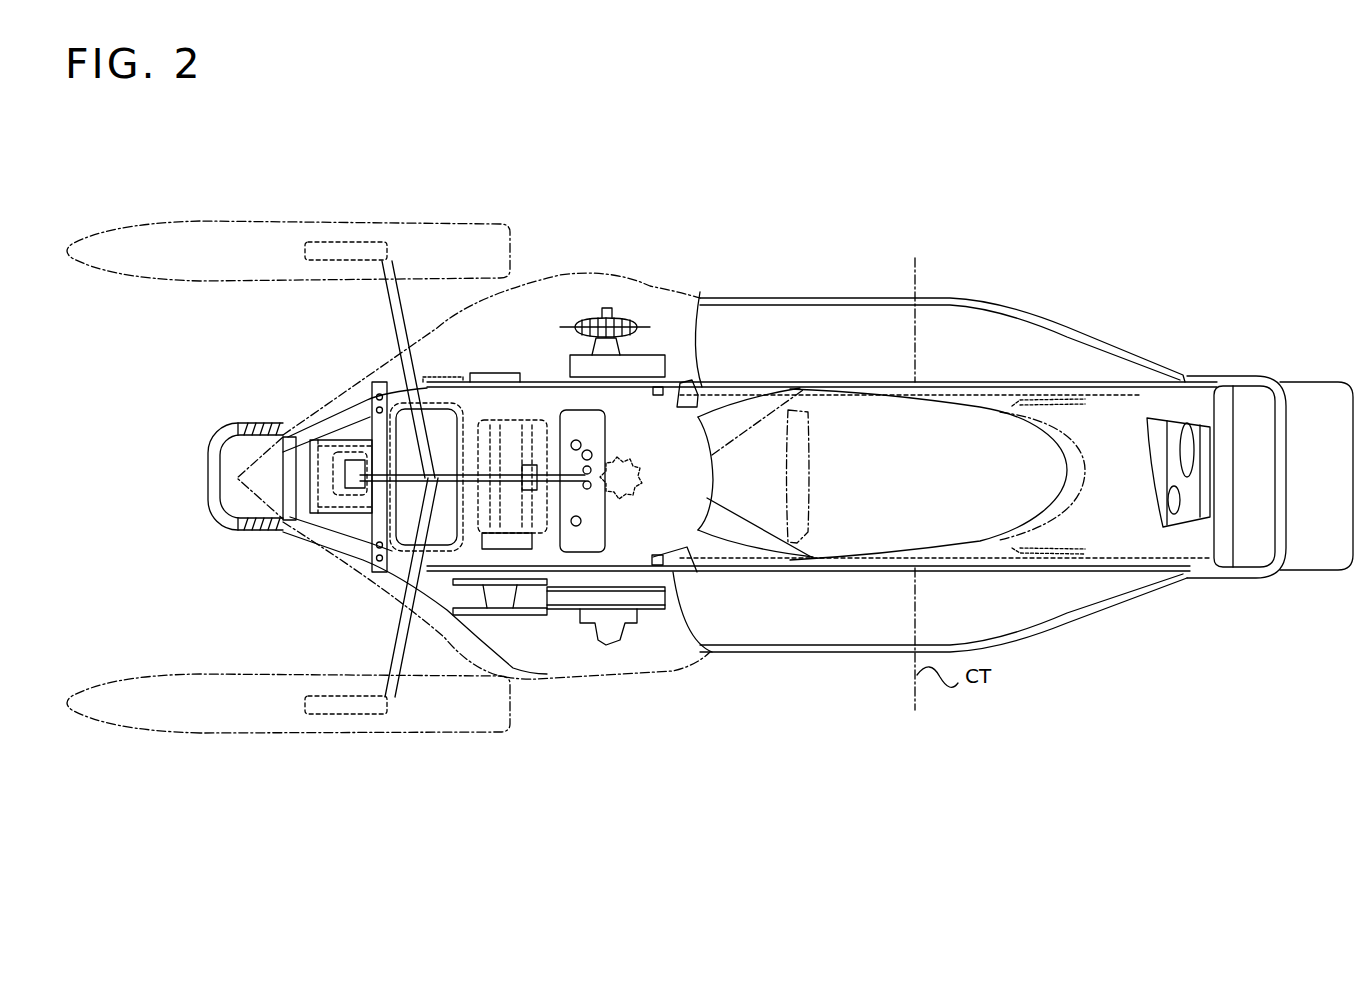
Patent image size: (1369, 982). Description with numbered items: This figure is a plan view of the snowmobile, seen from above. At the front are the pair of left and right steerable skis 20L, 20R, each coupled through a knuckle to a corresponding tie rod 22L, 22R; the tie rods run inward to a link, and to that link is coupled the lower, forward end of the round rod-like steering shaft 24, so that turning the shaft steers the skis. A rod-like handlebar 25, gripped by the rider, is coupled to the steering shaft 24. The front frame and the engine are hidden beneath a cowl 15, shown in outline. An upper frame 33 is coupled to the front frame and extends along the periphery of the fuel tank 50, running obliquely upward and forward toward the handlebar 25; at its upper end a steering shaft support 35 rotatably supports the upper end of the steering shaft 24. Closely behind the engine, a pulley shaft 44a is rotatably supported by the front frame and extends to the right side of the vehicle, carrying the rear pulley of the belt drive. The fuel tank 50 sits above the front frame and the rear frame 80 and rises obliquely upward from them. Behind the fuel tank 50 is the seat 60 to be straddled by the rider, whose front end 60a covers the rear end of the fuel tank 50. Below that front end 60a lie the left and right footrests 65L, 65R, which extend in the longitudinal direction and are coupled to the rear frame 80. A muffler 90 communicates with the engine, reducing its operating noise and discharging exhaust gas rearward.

The cowl 15 is at (320, 543).
The steerable ski 20R is at (283, 219).
The steerable ski 20L is at (283, 733).
The tie rod 22R is at (380, 316).
The tie rod 22L is at (410, 625).
The steering shaft 24 is at (493, 376).
The handlebar 25 is at (662, 413).
The upper frame 33 is at (700, 572).
The steering shaft support 35 is at (543, 585).
The pulley shaft 44a is at (632, 625).
The fuel tank 50 is at (703, 440).
The seat 60 is at (980, 407).
The front end of the seat 60a is at (737, 467).
The footrest 65R is at (1060, 340).
The footrest 65L is at (1033, 623).
The rear frame 80 is at (1200, 410).
The muffler 90 is at (1170, 432).